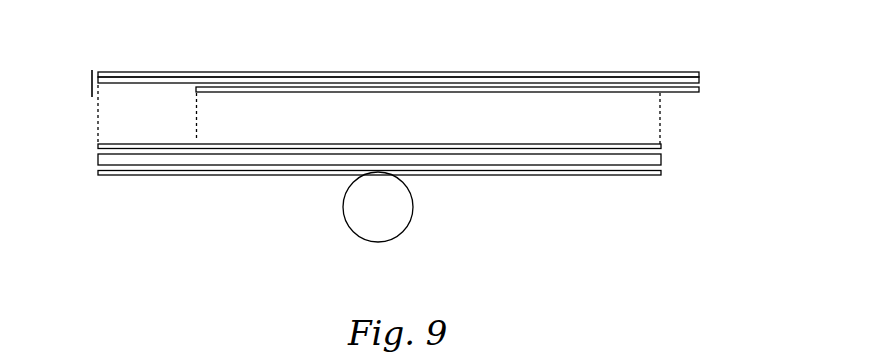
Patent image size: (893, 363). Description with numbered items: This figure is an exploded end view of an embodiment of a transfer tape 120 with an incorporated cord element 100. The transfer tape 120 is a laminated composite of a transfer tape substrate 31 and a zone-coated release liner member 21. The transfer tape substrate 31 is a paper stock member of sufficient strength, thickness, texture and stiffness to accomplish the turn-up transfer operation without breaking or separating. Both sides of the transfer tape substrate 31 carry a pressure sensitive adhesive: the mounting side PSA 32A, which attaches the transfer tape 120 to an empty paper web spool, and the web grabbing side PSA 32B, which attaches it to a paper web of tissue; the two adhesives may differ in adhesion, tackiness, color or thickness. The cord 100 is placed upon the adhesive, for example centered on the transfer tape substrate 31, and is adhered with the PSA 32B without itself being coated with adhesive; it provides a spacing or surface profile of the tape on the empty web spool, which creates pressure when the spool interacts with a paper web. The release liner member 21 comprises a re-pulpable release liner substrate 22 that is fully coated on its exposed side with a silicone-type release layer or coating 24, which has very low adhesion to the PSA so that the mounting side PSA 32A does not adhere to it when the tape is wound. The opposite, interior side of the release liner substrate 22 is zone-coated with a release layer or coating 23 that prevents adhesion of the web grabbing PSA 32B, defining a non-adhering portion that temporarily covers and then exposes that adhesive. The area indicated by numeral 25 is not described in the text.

The release liner member 21 is at (90, 84).
The release liner substrate 22 is at (700, 82).
The release layer or coating 23 is at (683, 95).
The release layer or coating 24 is at (624, 71).
The gap / spacer region 25 is at (118, 121).
The transfer tape substrate 31 is at (667, 162).
The mounting side PSA 32A is at (642, 180).
The web grabbing side PSA 32B is at (662, 145).
The cord element 100 is at (412, 223).
The transfer tape 120 is at (443, 223).